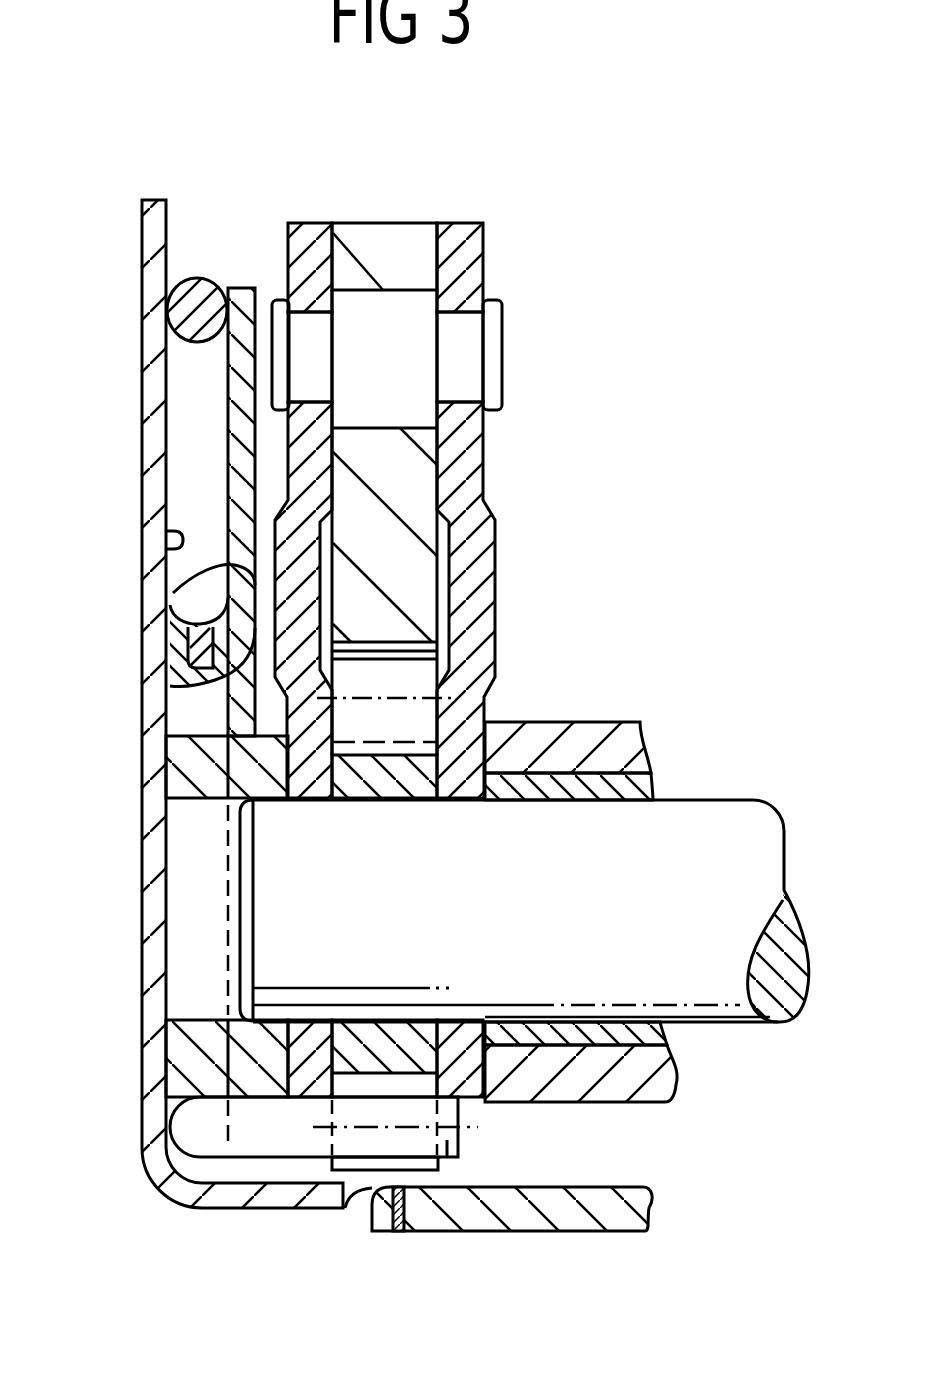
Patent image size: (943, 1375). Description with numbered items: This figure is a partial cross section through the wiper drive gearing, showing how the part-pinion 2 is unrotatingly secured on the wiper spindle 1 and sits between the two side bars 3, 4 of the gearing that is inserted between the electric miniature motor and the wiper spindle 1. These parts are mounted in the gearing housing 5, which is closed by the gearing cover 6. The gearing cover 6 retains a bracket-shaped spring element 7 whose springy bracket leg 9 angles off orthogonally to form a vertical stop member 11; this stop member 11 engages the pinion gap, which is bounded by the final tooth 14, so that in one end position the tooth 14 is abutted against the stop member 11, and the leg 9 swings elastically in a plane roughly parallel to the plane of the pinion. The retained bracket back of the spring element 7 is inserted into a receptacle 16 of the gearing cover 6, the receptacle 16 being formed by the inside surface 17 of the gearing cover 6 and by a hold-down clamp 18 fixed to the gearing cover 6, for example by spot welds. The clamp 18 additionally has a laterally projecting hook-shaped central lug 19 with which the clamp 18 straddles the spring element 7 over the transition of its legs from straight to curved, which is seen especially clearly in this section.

The wiper spindle 1 is at (730, 817).
The part-pinion 2 is at (397, 760).
The side bar 3 is at (485, 245).
The side bar 4 is at (298, 256).
The gearing housing 5 is at (577, 1212).
The gearing cover 6 is at (147, 462).
The spring element 7 is at (277, 1197).
The bracket leg 9 is at (192, 717).
The stop member 11 is at (448, 1145).
The final tooth 14 is at (360, 1168).
The receptacle 16 is at (230, 400).
The inside surface 17 is at (170, 548).
The hold-down clamp 18 is at (173, 593).
The hook-shaped central lug 19 is at (173, 685).